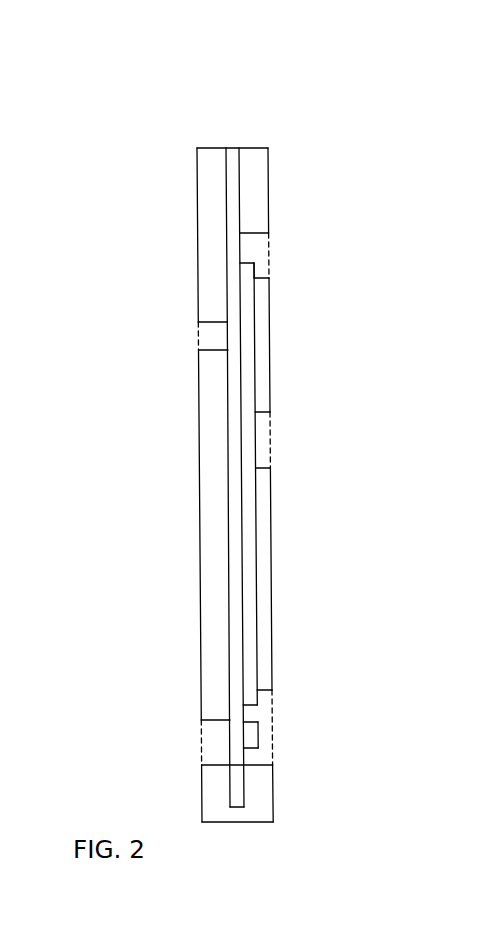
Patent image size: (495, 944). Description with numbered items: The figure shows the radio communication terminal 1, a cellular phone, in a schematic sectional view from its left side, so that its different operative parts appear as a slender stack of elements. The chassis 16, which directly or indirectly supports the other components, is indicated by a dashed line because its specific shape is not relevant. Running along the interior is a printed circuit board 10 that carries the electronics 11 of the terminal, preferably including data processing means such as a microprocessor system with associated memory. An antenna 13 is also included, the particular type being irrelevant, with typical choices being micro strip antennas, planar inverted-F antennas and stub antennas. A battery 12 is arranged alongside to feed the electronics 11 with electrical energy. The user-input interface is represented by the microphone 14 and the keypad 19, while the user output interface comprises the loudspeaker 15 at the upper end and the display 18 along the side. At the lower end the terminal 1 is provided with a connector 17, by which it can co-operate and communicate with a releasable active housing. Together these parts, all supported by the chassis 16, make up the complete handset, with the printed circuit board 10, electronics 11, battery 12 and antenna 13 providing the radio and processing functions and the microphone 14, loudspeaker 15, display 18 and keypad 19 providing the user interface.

The radio communication terminal 1 is at (368, 232).
The printed circuit board 10 is at (225, 148).
The electronics 11 is at (258, 440).
The battery 12 is at (199, 511).
The antenna 13 is at (197, 263).
The microphone 14 is at (260, 727).
The loudspeaker 15 is at (268, 184).
The chassis 16 is at (203, 747).
The connector 17 is at (233, 822).
The display 18 is at (270, 318).
The keypad 19 is at (272, 572).